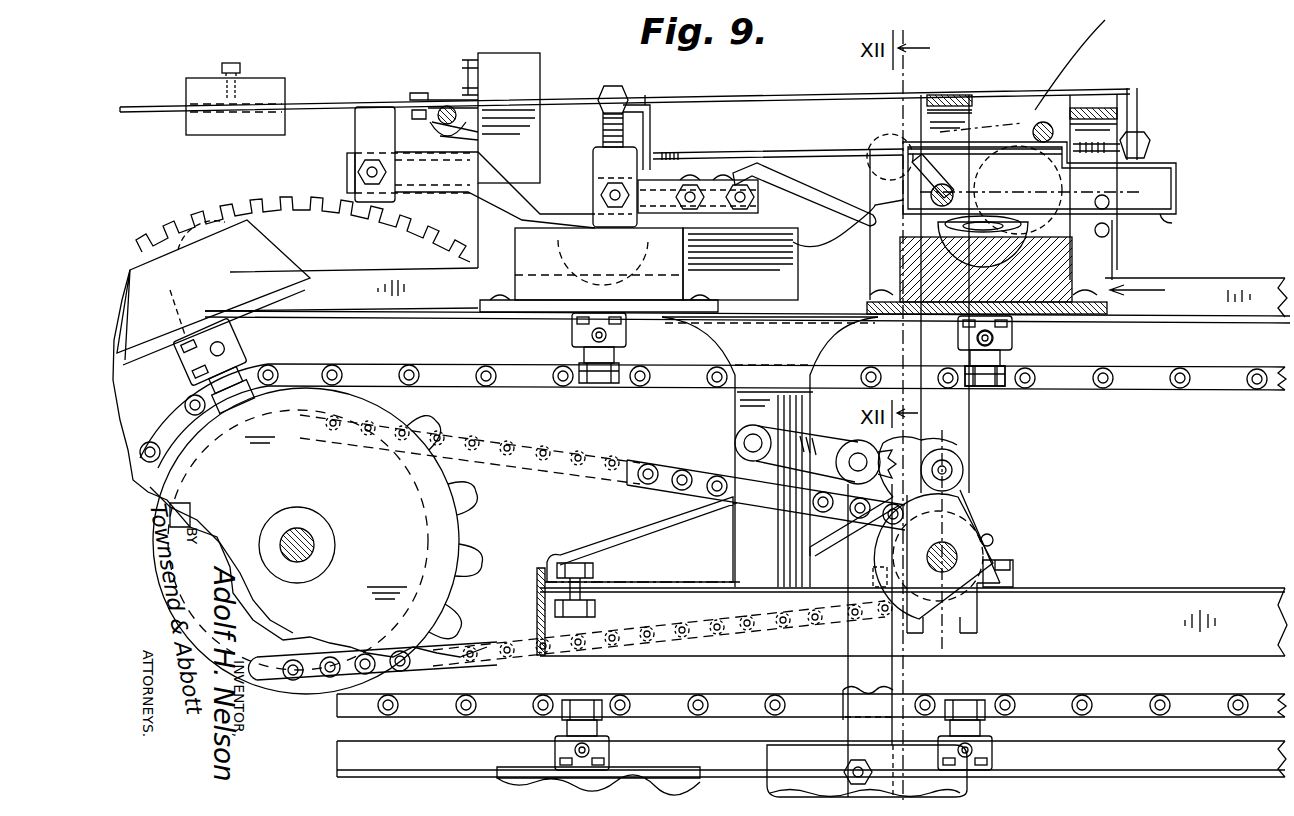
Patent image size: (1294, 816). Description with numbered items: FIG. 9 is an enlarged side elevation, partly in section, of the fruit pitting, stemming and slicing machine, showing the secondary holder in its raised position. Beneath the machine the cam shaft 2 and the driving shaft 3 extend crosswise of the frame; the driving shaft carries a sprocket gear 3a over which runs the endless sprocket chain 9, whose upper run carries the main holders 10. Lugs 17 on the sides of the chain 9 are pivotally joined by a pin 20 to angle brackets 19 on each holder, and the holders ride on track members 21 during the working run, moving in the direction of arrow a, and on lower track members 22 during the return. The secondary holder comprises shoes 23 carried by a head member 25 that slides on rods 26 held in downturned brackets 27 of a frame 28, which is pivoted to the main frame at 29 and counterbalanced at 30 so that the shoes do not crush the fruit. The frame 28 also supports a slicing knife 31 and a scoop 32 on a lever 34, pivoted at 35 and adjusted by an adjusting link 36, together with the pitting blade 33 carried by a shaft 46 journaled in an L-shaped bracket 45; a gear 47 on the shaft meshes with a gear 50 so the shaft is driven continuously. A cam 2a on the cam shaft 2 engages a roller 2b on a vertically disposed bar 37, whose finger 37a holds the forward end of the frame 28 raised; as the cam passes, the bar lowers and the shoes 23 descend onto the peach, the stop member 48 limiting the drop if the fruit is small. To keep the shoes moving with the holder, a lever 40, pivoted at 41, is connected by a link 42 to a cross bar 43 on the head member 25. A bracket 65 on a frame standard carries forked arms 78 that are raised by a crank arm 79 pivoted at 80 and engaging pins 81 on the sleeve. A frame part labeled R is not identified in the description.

The cam shaft 2 is at (955, 557).
The cam 2a is at (872, 549).
The roller 2b is at (966, 470).
The driving shaft 3 is at (320, 540).
The sprocket gear 3a is at (452, 537).
The sprocket chain 9 is at (1200, 372).
The main holder 10 is at (1158, 262).
The lugs 17 is at (1005, 388).
The angle brackets 19 is at (1015, 328).
The pin 20 is at (995, 342).
The track members 21 is at (1224, 290).
The track members 22 is at (355, 748).
The shoes 23 is at (1174, 223).
The head member 25 is at (938, 137).
The rods 26 is at (712, 154).
The downturned brackets 27 is at (655, 118).
The pivoted frame 28 is at (790, 96).
The pivot 29 is at (447, 106).
The counterbalance 30 is at (265, 92).
The slicing knife 31 is at (792, 250).
The scoop 32 is at (822, 193).
The pitting blade 33 is at (866, 190).
The lever 34 is at (495, 190).
The pivot 35 is at (358, 172).
The adjusting link 36 is at (598, 158).
The vertically disposed bar 37 is at (955, 436).
The finger 37a is at (948, 98).
The lever 40 is at (876, 705).
The pivot 41 is at (842, 772).
The link 42 is at (992, 125).
The cross bar 43 is at (1046, 124).
The L-shaped bracket 45 is at (1108, 95).
The shaft 46 is at (878, 258).
The gear 47 is at (898, 228).
The stop member 48 is at (1120, 115).
The gear 50 is at (1072, 215).
The bracket 65 is at (637, 576).
The arms 78 is at (770, 452).
The crank arm 79 is at (930, 462).
The pivot 80 is at (858, 452).
The pins 81 is at (738, 440).
The arrow a is at (1195, 297).
The plate R is at (1172, 610).